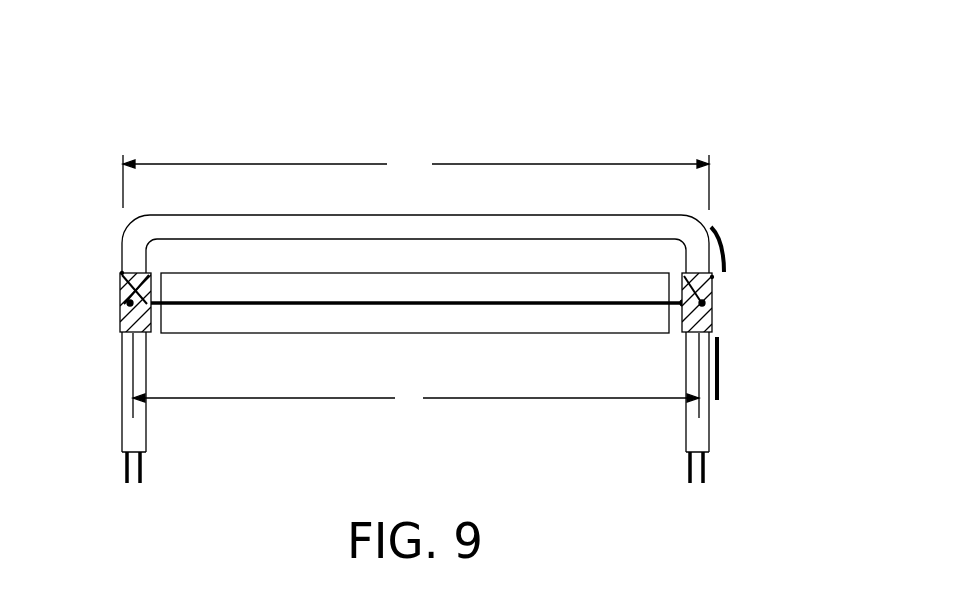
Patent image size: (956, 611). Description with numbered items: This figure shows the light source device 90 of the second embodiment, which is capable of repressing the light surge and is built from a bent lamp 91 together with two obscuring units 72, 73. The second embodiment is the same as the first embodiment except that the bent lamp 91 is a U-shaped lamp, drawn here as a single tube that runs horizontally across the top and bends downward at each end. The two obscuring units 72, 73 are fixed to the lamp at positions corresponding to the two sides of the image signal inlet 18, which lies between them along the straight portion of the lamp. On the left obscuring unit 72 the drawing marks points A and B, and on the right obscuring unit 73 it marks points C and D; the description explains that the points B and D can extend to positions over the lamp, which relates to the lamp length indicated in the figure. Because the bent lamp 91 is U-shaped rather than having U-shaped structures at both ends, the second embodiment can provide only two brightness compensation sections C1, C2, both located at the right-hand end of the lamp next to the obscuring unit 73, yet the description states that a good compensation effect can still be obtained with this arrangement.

The light source device 90 is at (583, 108).
The bent lamp 91 is at (503, 227).
The image signal inlet 18 is at (290, 285).
The obscuring unit 72 is at (122, 326).
The obscuring unit 73 is at (712, 313).
The point A is at (122, 273).
The point B is at (129, 303).
The point C is at (712, 277).
The point D is at (702, 295).
The brightness compensation section C1 is at (720, 359).
The brightness compensation section C2 is at (720, 237).